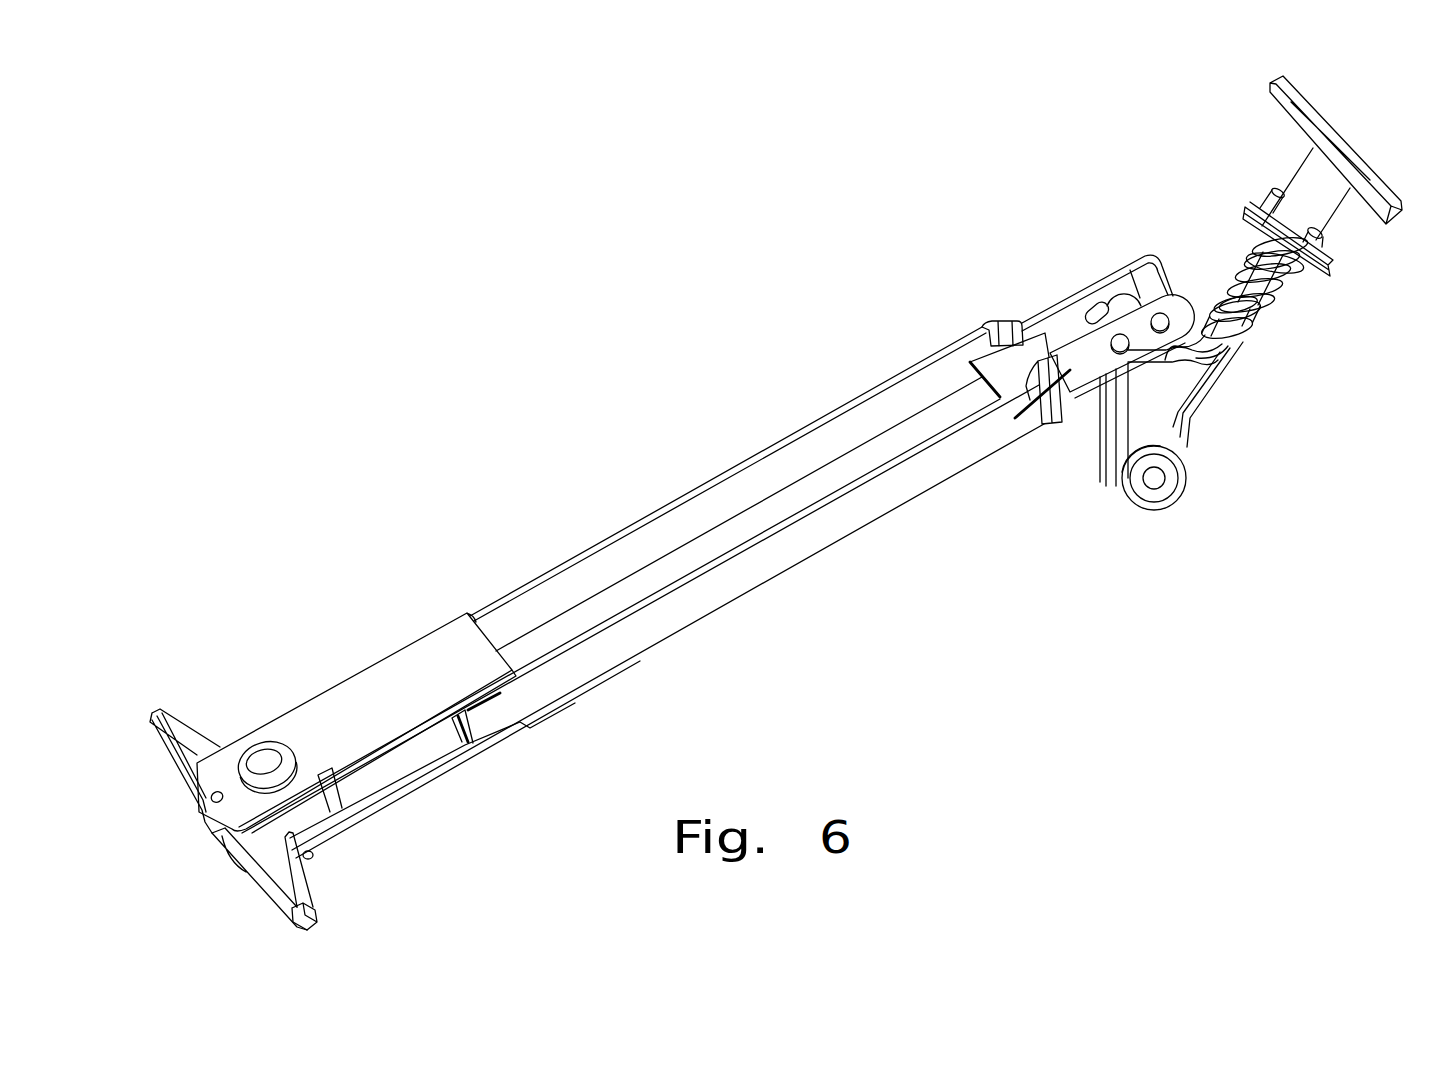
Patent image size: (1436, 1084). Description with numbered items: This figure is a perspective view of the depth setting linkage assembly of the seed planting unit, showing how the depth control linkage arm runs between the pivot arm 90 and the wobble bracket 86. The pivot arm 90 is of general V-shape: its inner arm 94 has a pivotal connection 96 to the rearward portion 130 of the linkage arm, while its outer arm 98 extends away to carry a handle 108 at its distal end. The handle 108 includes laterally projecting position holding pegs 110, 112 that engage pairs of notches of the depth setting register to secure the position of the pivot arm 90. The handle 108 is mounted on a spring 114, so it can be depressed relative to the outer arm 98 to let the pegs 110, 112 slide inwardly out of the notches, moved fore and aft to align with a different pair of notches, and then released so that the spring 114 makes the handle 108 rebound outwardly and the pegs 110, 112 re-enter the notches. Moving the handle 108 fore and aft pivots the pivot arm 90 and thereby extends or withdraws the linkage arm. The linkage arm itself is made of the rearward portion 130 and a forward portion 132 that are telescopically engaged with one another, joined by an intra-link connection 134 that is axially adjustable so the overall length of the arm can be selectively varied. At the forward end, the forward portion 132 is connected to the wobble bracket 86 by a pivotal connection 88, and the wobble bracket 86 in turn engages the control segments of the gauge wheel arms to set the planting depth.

The wobble bracket 86 is at (175, 715).
The pivotal connection 88 is at (263, 752).
The pivot arm 90 is at (1222, 432).
The inner arm 94 is at (1113, 390).
The pivotal connection 96 is at (1133, 273).
The outer arm 98 is at (1240, 348).
The handle 108 is at (1338, 125).
The position holding peg 110 is at (1318, 237).
The position holding peg 112 is at (1275, 188).
The spring 114 is at (1232, 272).
The rearward portion 130 is at (856, 393).
The forward portion 132 is at (430, 633).
The intra-link connection 134 is at (472, 756).